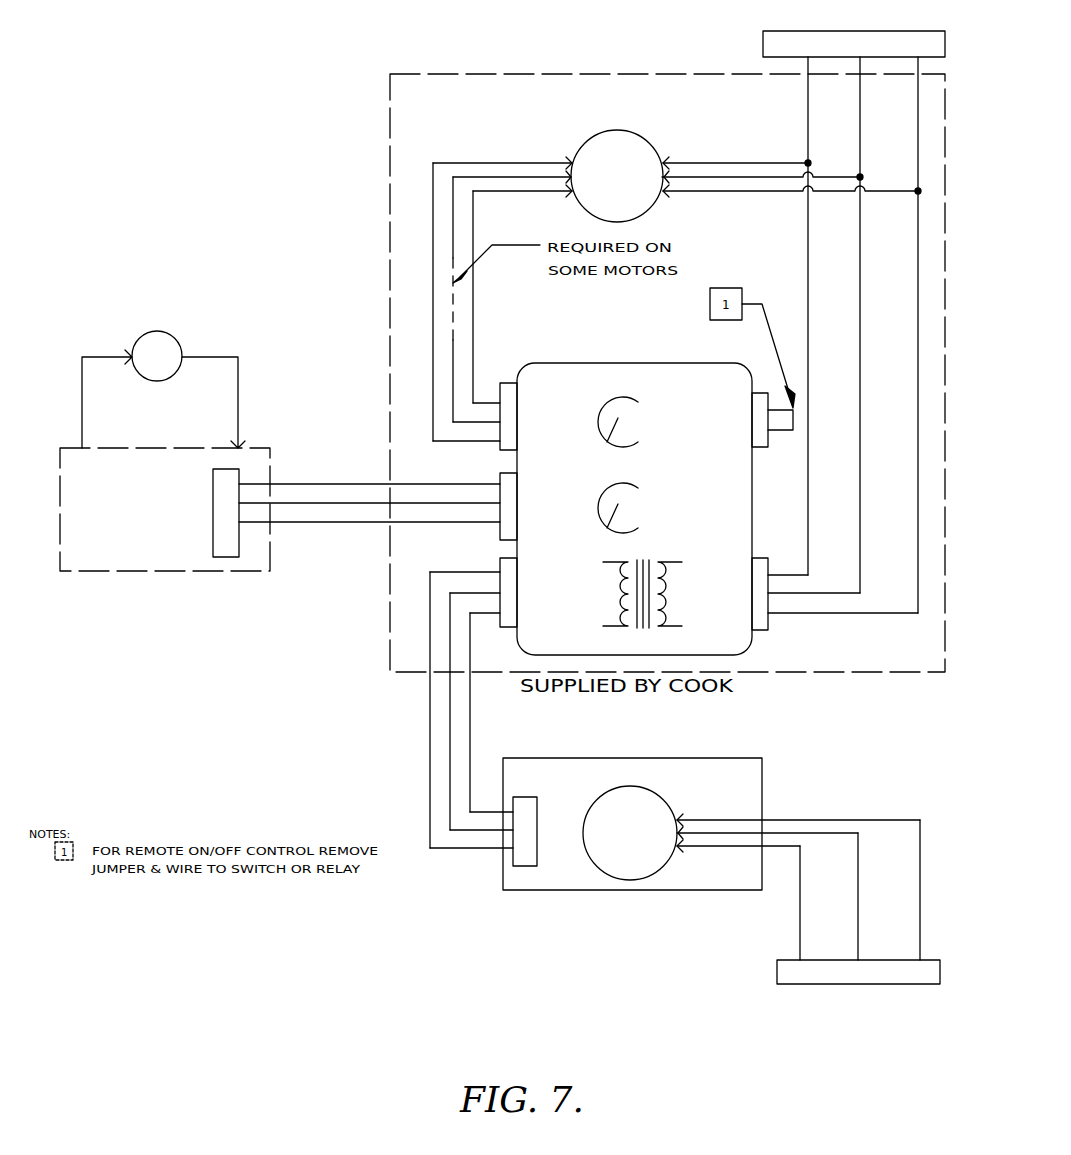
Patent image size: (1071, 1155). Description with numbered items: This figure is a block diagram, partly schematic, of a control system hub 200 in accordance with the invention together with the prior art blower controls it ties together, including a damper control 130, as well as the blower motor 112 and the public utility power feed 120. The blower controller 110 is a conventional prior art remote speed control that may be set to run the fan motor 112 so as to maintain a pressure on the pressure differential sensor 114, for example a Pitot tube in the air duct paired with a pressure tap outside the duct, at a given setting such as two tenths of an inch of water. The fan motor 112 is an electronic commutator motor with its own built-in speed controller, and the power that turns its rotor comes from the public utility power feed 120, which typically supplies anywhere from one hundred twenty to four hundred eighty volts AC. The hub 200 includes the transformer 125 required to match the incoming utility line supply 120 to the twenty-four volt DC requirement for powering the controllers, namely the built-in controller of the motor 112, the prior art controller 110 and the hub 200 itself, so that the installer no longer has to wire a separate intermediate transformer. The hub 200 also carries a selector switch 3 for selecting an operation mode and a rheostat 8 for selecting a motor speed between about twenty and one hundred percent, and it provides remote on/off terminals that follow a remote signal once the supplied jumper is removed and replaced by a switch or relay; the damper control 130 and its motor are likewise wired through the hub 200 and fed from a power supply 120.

The public utility power feed 120 is at (765, 43).
The fan motor 112 is at (663, 150).
The control system hub 200 is at (518, 360).
The rheostat 8 is at (613, 447).
The selector switch 3 is at (618, 532).
The transformer 125 is at (665, 621).
The blower controller 110 is at (270, 555).
The pressure differential sensor 114 is at (162, 330).
The damper controls 130 is at (546, 758).